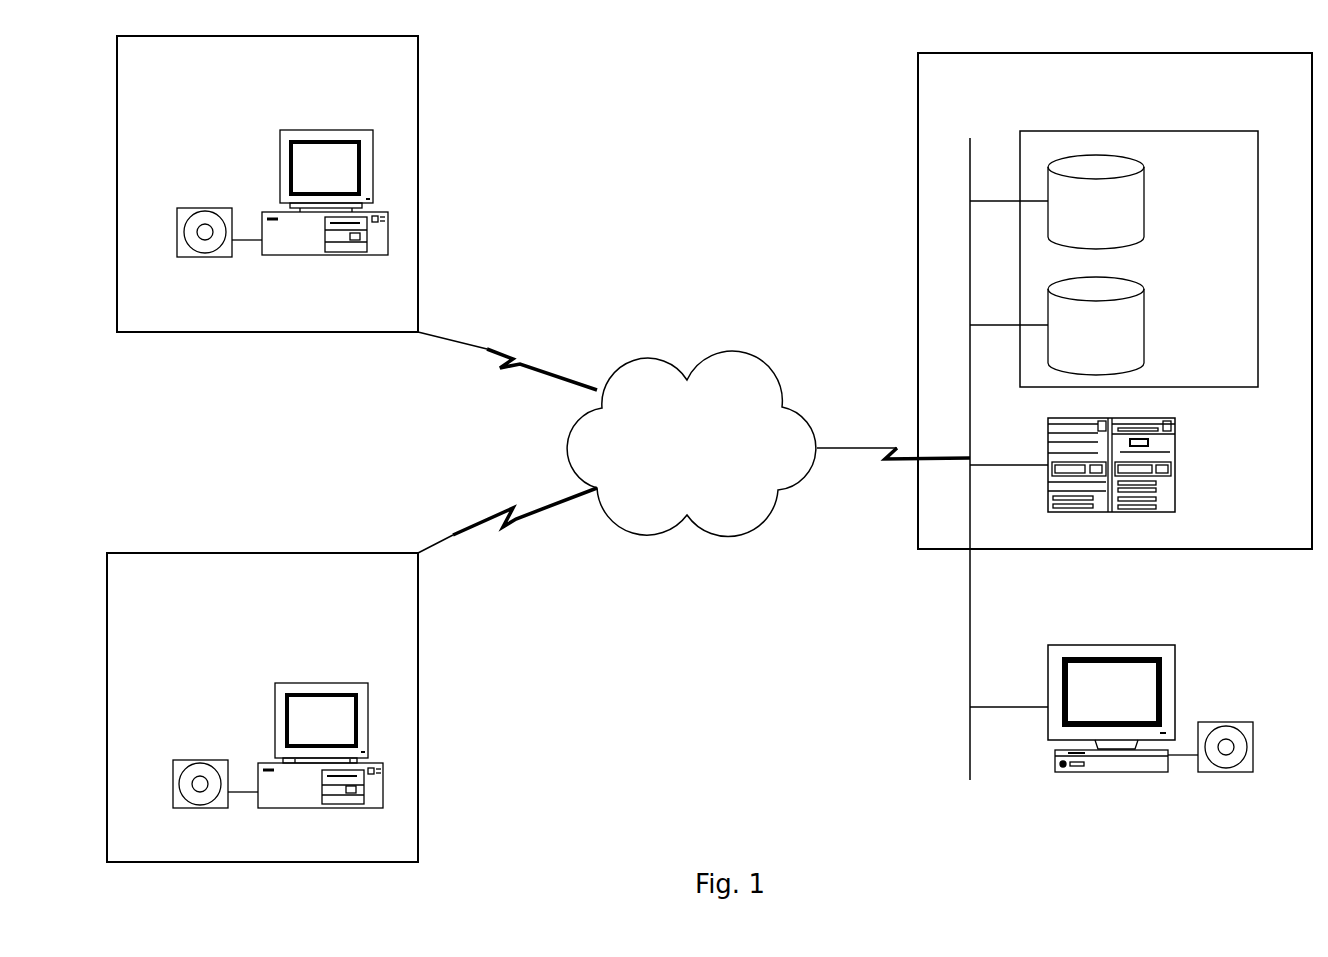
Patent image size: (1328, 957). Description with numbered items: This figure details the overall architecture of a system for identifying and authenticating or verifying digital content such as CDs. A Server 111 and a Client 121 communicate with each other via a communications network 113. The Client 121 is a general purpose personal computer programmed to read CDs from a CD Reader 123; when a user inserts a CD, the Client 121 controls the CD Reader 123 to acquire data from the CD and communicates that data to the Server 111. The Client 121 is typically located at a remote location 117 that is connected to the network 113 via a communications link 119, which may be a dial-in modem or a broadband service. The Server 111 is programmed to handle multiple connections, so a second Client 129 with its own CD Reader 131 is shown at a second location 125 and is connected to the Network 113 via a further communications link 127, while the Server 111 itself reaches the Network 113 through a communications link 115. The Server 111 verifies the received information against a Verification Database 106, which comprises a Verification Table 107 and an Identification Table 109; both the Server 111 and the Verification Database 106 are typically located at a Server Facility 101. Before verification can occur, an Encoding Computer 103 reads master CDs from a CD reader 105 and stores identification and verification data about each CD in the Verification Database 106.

The Server Facility 101 is at (918, 503).
The Encoding Computer 103 is at (1108, 645).
The CD reader 105 is at (1228, 722).
The Verification Database 106 is at (1070, 131).
The Verification Table 107 is at (1144, 200).
The Identification Table 109 is at (1145, 325).
The Server 111 is at (1178, 465).
The communications network 113 is at (728, 361).
The communications link 115 is at (887, 446).
The remote location 117 is at (418, 655).
The communications link 119 is at (450, 528).
The Client 121 is at (318, 683).
The CD Reader 123 is at (198, 760).
The first client system 125 is at (418, 155).
The communications link 127 is at (487, 343).
The Client 129 is at (325, 130).
The CD Reader 131 is at (200, 208).